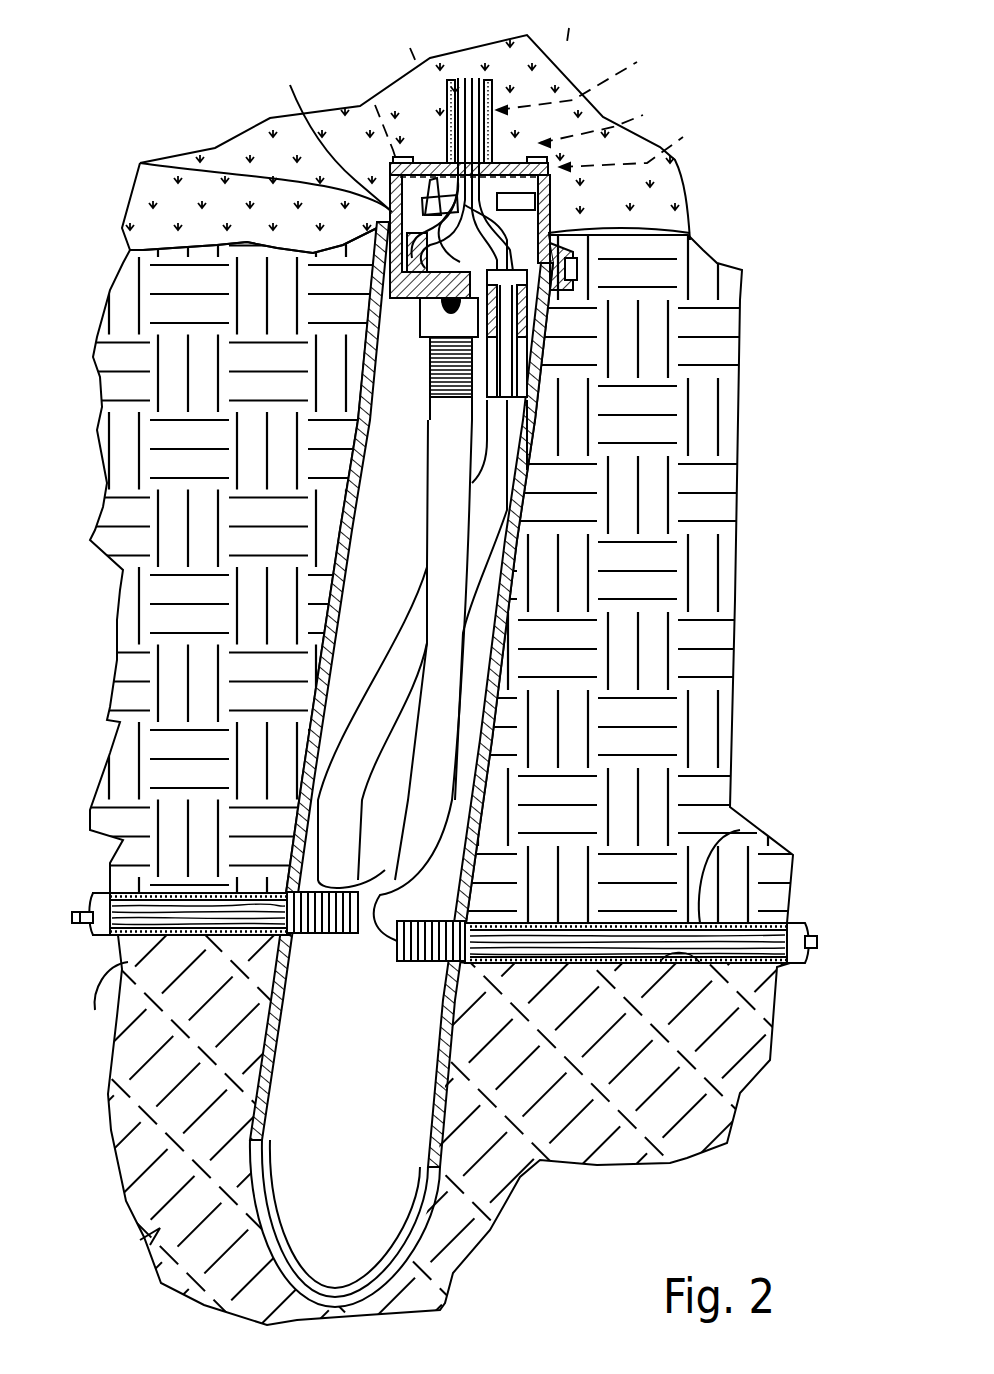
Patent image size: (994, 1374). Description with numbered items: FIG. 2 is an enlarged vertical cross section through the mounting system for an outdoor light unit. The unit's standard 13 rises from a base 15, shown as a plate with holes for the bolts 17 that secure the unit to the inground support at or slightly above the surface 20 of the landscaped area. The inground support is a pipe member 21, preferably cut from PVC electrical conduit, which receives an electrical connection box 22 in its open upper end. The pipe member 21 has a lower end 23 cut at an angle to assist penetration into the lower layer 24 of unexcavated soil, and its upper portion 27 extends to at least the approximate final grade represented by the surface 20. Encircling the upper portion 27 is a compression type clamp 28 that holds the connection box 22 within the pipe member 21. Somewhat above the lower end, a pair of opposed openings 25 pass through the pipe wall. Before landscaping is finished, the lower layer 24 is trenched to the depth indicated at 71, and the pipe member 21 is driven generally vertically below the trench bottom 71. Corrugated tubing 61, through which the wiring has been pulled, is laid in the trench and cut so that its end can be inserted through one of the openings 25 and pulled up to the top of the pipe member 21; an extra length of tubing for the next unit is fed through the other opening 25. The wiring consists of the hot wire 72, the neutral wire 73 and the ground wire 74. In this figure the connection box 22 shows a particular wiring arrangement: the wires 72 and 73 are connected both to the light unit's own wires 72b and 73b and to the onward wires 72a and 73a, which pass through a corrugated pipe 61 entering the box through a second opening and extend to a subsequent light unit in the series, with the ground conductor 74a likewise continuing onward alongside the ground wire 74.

The standard 13 is at (600, 75).
The base 15 is at (673, 143).
The bolts 17 is at (370, 102).
The surface 20 is at (285, 147).
The pipe member 21 is at (520, 590).
The connection box 22 is at (540, 202).
The lower end 23 is at (348, 1200).
The lower layer 24 is at (142, 1240).
The openings 25 is at (300, 893).
The upper portion 27 is at (540, 347).
The compression type clamp 28 is at (565, 268).
The corrugated tubing 61 is at (118, 1012).
The trench bottom 71 is at (735, 1090).
The hot wire 72 is at (105, 928).
The wire 72a is at (778, 967).
The wire of the light unit 72b is at (575, 14).
The neutral wire 73 is at (132, 960).
The wire 73a is at (790, 922).
The wire of the light unit 73b is at (400, 30).
The ground wire 74 is at (545, 330).
The wire 74a is at (818, 940).